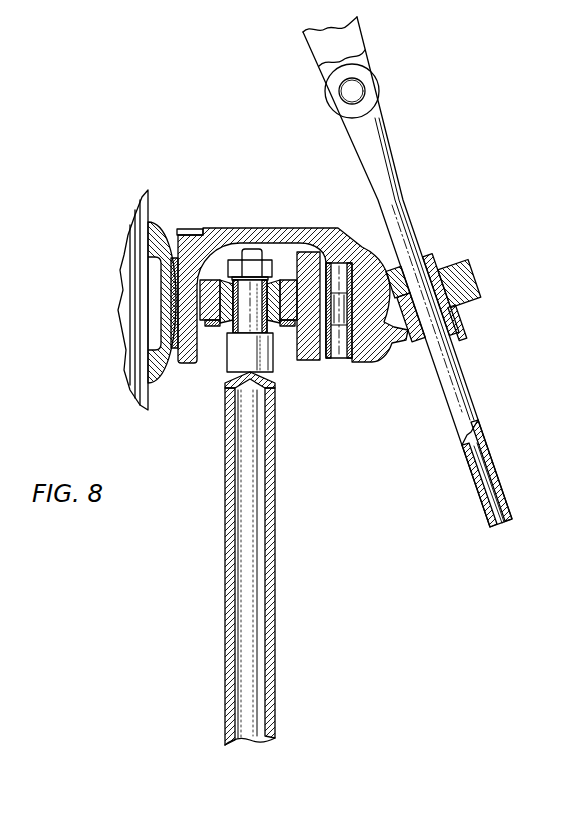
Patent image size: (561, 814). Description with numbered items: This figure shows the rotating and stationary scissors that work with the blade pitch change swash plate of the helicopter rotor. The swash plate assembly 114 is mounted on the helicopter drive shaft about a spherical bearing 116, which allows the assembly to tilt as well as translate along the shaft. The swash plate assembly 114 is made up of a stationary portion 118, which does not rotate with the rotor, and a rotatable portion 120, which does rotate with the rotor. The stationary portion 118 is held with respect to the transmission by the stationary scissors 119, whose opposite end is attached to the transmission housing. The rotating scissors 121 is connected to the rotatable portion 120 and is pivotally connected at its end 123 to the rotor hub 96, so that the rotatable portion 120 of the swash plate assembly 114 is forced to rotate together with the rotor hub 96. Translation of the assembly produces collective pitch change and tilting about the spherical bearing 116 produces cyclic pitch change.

The rotor hub 96 is at (353, 42).
The swash plate assembly 114 is at (418, 266).
The spherical bearing 116 is at (151, 262).
The stationary portion 118 is at (215, 328).
The stationary scissors 119 is at (277, 580).
The rotatable portion 120 is at (302, 227).
The rotating scissors 121 is at (442, 184).
The end 123 is at (380, 82).